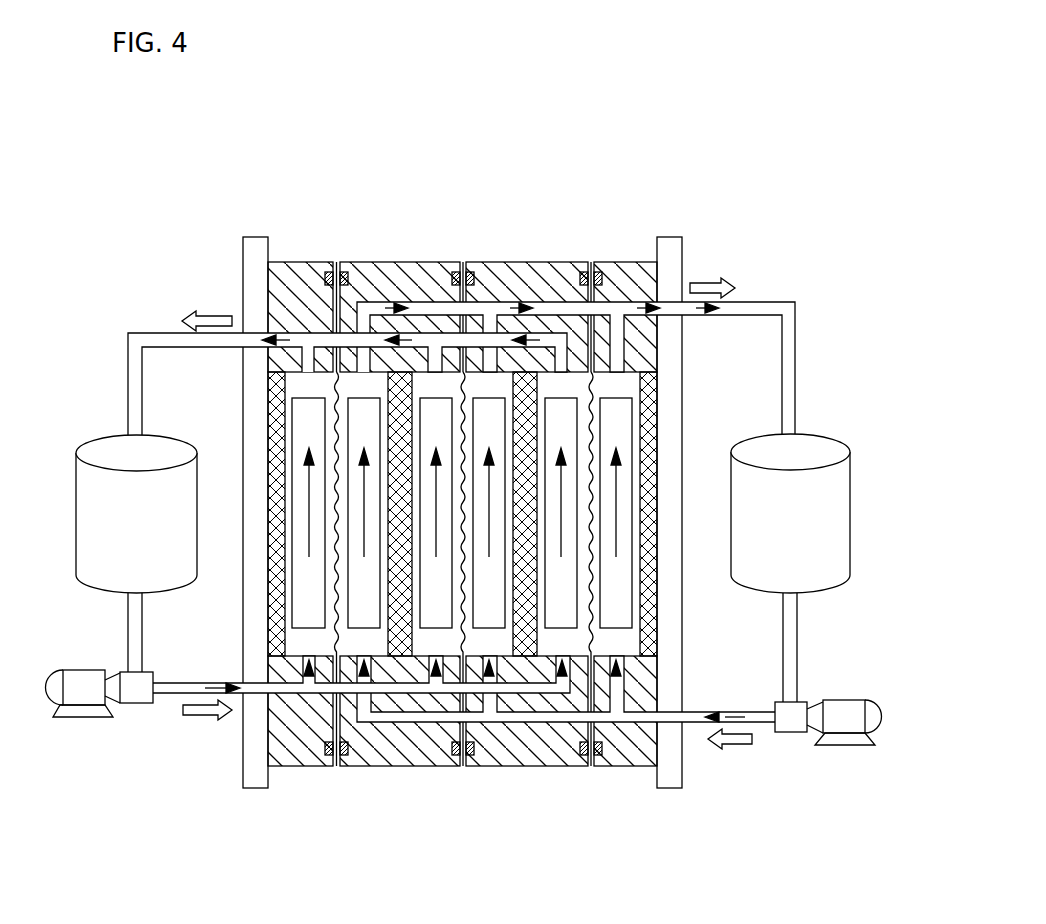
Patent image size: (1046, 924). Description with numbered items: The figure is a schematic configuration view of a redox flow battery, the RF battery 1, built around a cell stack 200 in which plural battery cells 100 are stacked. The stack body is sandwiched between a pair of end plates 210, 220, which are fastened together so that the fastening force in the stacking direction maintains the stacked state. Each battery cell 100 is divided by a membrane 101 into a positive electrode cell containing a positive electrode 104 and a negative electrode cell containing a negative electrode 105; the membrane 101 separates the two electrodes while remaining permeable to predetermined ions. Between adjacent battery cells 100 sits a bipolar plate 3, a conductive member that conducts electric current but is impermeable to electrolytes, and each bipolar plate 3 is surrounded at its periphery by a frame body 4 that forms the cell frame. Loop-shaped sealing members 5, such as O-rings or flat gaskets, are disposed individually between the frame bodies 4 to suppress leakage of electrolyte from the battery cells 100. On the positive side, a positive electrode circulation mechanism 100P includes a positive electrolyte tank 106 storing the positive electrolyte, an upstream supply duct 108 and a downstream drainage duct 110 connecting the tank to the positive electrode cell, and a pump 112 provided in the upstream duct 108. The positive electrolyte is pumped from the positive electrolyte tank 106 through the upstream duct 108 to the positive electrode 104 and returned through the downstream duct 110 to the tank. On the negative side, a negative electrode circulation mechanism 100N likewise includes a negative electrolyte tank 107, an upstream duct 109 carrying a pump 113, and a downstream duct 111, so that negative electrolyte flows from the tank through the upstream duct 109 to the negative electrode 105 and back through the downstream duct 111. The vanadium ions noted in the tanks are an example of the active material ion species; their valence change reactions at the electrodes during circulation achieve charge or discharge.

The RF battery 1 is at (113, 147).
The cell stack 200 is at (660, 195).
The end plate 220 is at (256, 776).
The end plate 210 is at (672, 776).
The frame body 4 is at (290, 262).
The sealing member 5 is at (344, 262).
The bipolar plate 3 is at (400, 378).
The battery cell 100 is at (280, 768).
The membrane 101 is at (336, 758).
The positive electrode 104 is at (345, 586).
The negative electrode 105 is at (365, 605).
The positive electrode circulation mechanism 100P is at (112, 732).
The negative electrode circulation mechanism 100N is at (812, 752).
The positive electrolyte tank 106 is at (94, 440).
The negative electrolyte tank 107 is at (836, 440).
The upstream duct 108 is at (174, 694).
The upstream duct 109 is at (760, 722).
The downstream duct 110 is at (151, 333).
The downstream duct 111 is at (778, 302).
The pump 112 is at (72, 672).
The pump 113 is at (848, 703).